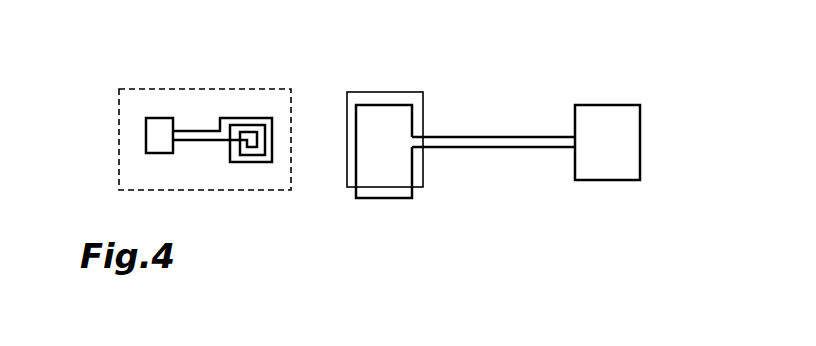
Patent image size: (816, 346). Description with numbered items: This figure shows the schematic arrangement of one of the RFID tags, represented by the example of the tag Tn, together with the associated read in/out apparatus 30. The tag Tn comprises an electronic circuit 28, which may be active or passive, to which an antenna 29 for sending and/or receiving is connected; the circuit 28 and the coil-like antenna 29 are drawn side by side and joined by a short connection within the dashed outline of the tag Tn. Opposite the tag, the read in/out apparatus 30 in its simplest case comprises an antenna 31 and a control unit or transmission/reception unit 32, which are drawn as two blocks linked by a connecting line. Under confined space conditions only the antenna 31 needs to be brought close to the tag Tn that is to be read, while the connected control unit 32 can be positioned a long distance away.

The tag Tn is at (118, 123).
The electronic circuit 28 is at (160, 130).
The antenna 29 is at (247, 157).
The read in/out apparatus 30 is at (518, 195).
The antenna 31 is at (412, 113).
The control unit 32 is at (620, 150).